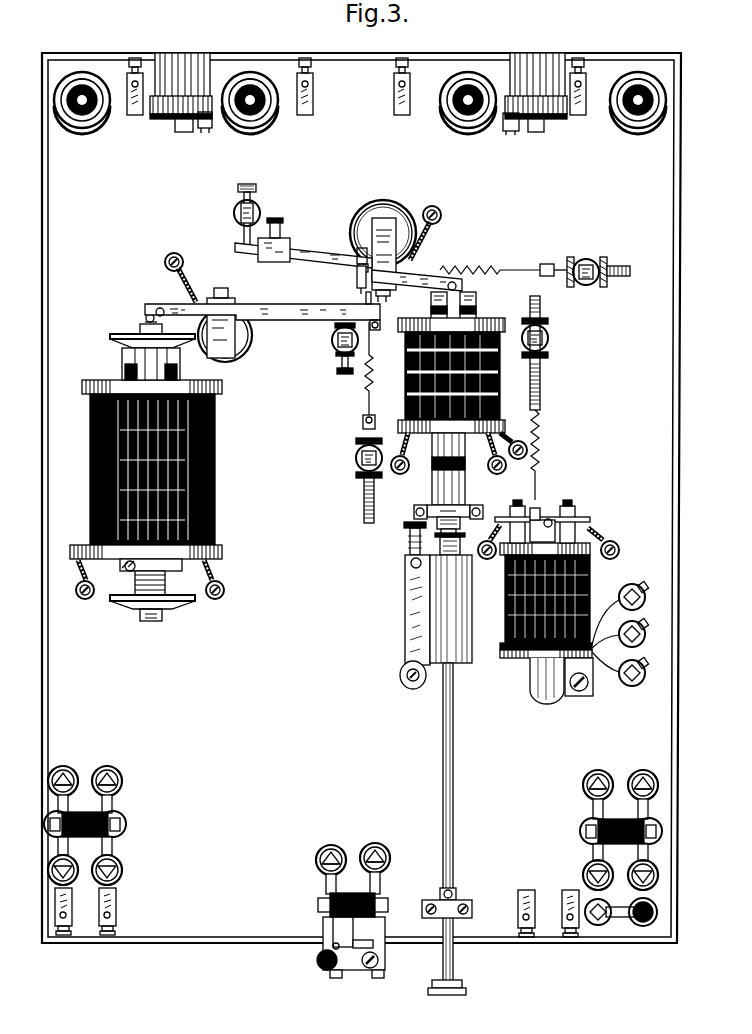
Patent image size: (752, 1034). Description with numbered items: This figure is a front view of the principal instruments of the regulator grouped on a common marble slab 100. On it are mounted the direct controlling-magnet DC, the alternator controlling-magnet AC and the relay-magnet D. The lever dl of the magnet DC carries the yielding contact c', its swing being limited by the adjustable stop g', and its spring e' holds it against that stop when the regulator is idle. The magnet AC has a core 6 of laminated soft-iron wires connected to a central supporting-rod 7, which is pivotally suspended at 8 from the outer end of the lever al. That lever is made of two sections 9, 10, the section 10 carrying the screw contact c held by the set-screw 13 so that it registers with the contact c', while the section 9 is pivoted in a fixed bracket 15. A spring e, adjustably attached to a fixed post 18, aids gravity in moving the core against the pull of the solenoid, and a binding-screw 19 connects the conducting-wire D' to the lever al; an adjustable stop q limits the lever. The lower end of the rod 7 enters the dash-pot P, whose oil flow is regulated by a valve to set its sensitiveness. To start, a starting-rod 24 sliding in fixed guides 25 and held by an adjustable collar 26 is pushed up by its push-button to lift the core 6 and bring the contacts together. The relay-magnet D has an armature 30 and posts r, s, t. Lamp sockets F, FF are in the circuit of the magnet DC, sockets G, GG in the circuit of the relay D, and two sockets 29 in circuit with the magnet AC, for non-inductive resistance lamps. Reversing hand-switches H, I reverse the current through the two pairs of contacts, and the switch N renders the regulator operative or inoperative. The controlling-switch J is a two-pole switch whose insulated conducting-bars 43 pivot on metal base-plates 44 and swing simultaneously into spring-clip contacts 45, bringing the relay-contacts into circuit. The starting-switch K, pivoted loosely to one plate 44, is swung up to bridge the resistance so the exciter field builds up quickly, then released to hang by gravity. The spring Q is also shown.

The slab 100 is at (361, 498).
The socket G is at (82, 128).
The socket GG is at (630, 128).
The socket FF is at (250, 128).
The socket F is at (463, 128).
The socket 29 is at (170, 118).
The direct controlling-magnet DC is at (212, 483).
The lever dl is at (258, 322).
The fixed bracket 15 is at (374, 224).
The adjusting screw q is at (243, 240).
The lever al is at (312, 248).
The lever-section 10 is at (322, 260).
The set-screw 13 is at (368, 258).
The contact c is at (353, 280).
The contact c' is at (355, 300).
The conducting-wire D' is at (429, 233).
The lever-section 9 is at (430, 284).
The pivot 8 is at (458, 284).
The binding-screw 19 is at (391, 304).
The supporting-rod 7 is at (432, 312).
The spring e is at (490, 259).
The fixed post 18 is at (586, 258).
The adjustable stop g' is at (335, 348).
The spring e' is at (363, 422).
The alternator controlling-magnet AC is at (492, 392).
The spring Q is at (541, 455).
The core 6 is at (444, 488).
The dash-pot P is at (410, 600).
The starting-rod 24 is at (453, 848).
The adjustable collar 26 is at (440, 893).
The fixed guide 25 is at (472, 912).
The armature 30 is at (546, 508).
The relay-magnet D is at (539, 629).
The post r is at (622, 613).
The post s is at (623, 633).
The post t is at (622, 669).
The reversing hand-switch I is at (85, 844).
The reversing hand-switch H is at (621, 823).
The switch N is at (621, 918).
The controlling-switch J is at (356, 916).
The base-plate 44 is at (370, 930).
The spring-clip contact 45 is at (374, 890).
The conducting-bar 43 is at (386, 912).
The starting-switch K is at (362, 970).